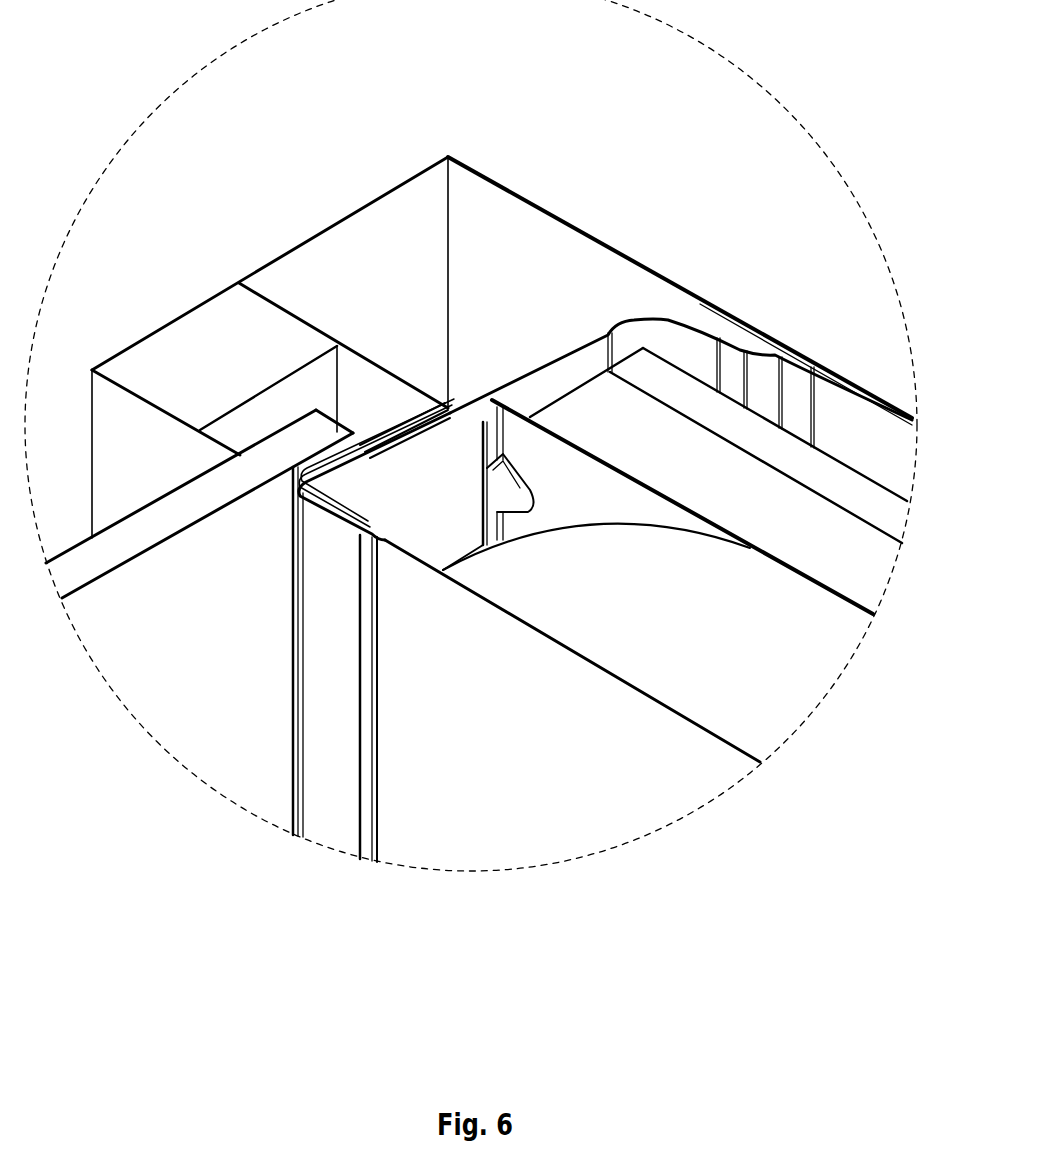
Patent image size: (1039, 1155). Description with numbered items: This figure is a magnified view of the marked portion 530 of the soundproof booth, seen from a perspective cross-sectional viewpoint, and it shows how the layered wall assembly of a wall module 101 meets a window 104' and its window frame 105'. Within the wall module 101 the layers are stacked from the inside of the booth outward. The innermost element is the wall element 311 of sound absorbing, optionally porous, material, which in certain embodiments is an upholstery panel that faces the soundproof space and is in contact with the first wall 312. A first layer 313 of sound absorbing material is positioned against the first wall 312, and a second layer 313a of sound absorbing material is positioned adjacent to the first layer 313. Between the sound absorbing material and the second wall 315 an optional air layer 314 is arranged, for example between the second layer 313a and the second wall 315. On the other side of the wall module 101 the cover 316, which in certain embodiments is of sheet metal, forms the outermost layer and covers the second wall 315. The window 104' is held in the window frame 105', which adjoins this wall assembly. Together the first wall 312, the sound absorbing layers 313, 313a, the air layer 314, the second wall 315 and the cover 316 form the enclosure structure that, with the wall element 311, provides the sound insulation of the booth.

The marked portion 530 is at (200, 72).
The window frame 105' is at (269, 347).
The window 104' is at (190, 504).
The wall module 101 is at (875, 362).
The cover 316 is at (668, 270).
The second wall 315 is at (693, 317).
The air layer 314 is at (829, 403).
The second layer of sound absorbing material 313a is at (793, 470).
The first layer of sound absorbing material 313 is at (819, 563).
The first wall 312 is at (620, 490).
The wall element of sound absorbing material 311 is at (630, 668).